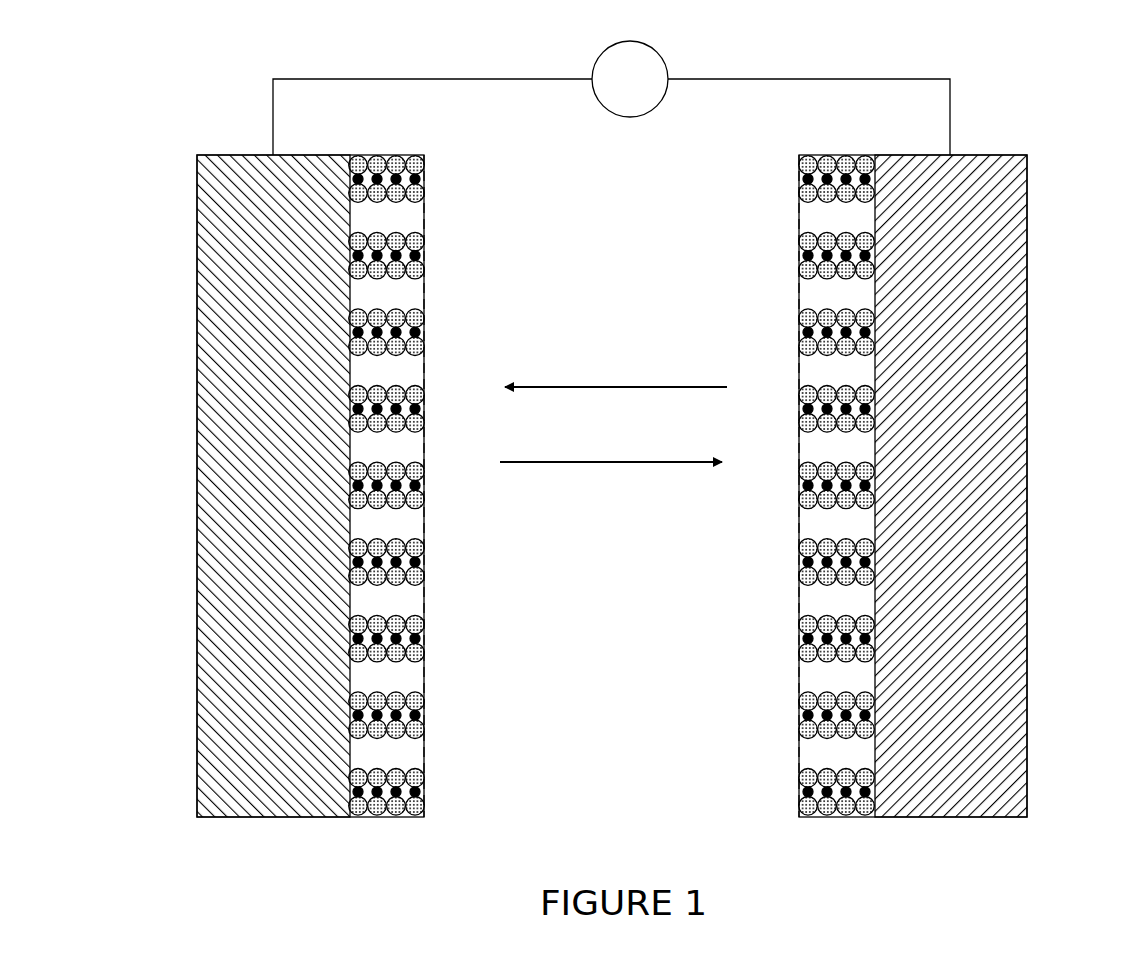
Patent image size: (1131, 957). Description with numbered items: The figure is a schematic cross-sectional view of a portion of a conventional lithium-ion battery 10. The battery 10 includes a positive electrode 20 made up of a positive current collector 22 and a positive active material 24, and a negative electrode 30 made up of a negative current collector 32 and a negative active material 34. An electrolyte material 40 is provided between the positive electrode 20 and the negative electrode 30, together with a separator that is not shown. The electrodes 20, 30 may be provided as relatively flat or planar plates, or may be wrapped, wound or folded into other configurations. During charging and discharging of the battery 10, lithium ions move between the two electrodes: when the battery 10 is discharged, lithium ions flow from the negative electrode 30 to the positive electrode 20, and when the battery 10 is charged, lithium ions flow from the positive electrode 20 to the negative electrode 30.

The lithium-ion battery 10 is at (894, 64).
The positive electrode 20 is at (893, 842).
The positive current collector 22 is at (1000, 225).
The positive active material 24 is at (808, 162).
The negative electrode 30 is at (322, 842).
The negative current collector 32 is at (255, 226).
The negative active material 34 is at (402, 167).
The electrolyte material 40 is at (627, 589).